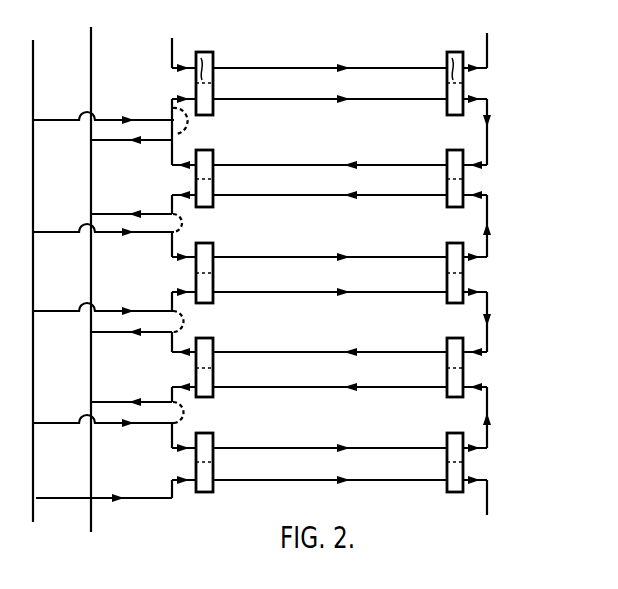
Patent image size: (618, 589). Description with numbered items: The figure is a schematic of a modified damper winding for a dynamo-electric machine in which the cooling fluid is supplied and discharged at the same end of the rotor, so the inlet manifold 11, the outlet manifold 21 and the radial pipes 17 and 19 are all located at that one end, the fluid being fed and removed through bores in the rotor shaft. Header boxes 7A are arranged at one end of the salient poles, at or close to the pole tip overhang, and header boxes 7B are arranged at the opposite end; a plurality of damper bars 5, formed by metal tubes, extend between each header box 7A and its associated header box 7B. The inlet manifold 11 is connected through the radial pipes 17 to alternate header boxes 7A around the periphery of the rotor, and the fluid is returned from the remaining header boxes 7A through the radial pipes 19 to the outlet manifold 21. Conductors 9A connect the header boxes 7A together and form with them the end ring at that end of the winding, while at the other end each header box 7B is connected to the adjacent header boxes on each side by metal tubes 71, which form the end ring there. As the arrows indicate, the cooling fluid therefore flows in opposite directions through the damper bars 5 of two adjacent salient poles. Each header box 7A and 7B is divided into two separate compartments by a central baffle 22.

The damper bars 5 is at (282, 66).
The header box 7A is at (206, 108).
The header box 7B is at (452, 98).
The conductors 9A is at (175, 112).
The inlet manifold 11 is at (34, 222).
The radial pipes 17 is at (104, 117).
The radial pipes 19 is at (149, 142).
The outlet manifold 21 is at (92, 181).
The central baffle 22 is at (201, 58).
The metal tubes 71 is at (489, 148).